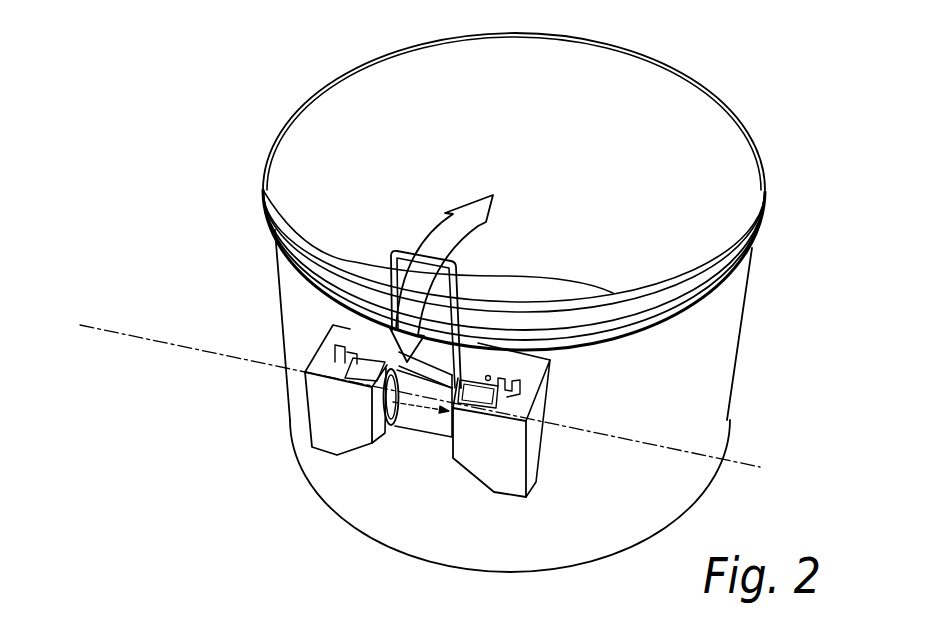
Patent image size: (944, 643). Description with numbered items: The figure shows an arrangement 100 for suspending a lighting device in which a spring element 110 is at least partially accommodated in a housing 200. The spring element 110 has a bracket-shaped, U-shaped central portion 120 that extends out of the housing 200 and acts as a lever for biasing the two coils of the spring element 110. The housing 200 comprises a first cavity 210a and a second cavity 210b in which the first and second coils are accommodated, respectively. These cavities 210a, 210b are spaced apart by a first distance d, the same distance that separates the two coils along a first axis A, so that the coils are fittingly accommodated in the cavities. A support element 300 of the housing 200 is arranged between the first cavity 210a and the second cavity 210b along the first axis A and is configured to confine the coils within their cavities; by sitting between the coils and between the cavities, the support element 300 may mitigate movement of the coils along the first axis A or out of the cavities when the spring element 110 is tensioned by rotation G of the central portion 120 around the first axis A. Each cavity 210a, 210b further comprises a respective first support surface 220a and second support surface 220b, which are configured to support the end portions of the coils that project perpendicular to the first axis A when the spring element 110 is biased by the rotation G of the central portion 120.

The arrangement 100 is at (241, 422).
The spring element 110 is at (471, 362).
The central portion 120 is at (398, 250).
The housing 200 is at (540, 425).
The first cavity 210a is at (333, 356).
The second cavity 210b is at (520, 386).
The first support surface 220a is at (350, 340).
The second support surface 220b is at (512, 385).
The support element 300 is at (424, 424).
The first distance d is at (410, 408).
The rotation G is at (432, 225).
The first axis A is at (406, 387).